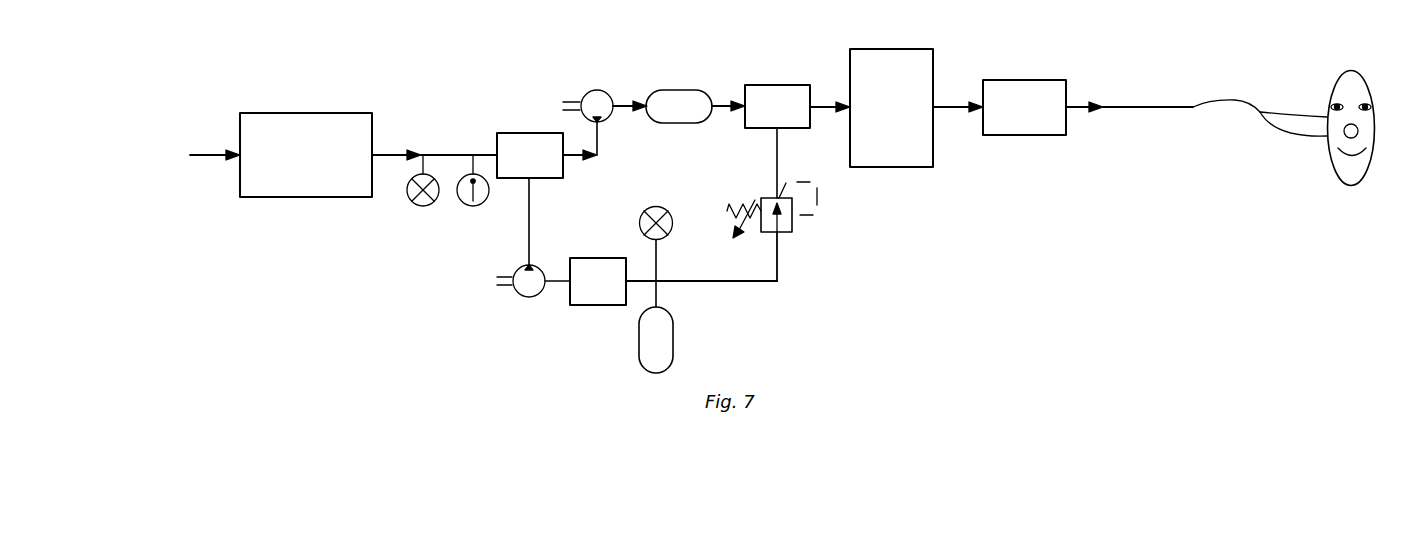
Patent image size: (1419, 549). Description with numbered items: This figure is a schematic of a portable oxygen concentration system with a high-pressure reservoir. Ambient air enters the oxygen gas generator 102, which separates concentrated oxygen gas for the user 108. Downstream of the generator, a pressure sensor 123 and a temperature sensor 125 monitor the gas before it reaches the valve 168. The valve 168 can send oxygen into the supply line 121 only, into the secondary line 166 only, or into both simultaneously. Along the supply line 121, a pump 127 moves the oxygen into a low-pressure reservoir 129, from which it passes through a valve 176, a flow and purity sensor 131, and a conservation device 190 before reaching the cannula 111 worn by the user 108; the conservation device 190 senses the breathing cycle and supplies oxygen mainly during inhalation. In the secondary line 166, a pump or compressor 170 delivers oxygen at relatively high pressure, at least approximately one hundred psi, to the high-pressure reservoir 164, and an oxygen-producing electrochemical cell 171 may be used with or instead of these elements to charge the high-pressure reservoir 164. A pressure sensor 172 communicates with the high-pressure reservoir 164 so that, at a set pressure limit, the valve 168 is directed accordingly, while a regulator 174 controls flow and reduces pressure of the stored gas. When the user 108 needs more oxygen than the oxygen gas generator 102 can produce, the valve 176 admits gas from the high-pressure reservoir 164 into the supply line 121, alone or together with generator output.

The oxygen gas generator 102 is at (306, 155).
The pressure sensor 123 is at (400, 188).
The temperature sensor 125 is at (473, 206).
The valve 168 is at (530, 155).
The pump 127 is at (594, 83).
The low-pressure reservoir 129 is at (680, 90).
The valve 176 is at (777, 106).
The flow and purity sensor 131 is at (891, 108).
The conservation device 190 is at (1024, 107).
The supply line 121 is at (1134, 93).
The cannula 111 is at (1259, 113).
The user 108 is at (1348, 186).
The pressure sensor 172 is at (673, 222).
The regulator 174 is at (793, 225).
The secondary line 166 is at (758, 288).
The oxygen-producing electrochemical cell 171 is at (598, 281).
The pump 170 is at (529, 298).
The high-pressure reservoir 164 is at (658, 375).